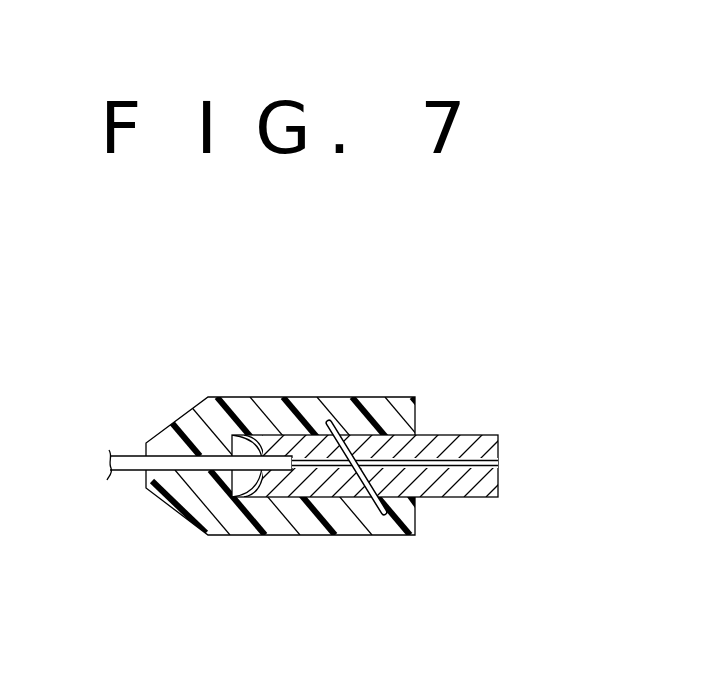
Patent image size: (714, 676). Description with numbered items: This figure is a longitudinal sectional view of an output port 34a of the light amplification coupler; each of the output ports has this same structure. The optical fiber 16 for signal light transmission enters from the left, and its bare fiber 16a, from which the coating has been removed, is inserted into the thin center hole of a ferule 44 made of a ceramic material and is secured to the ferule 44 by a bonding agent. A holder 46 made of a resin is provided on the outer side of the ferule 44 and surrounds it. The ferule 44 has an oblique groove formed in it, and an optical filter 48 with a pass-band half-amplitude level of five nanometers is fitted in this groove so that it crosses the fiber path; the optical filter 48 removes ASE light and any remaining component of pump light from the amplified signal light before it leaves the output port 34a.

The output port 34a is at (249, 380).
The holder 46 is at (306, 537).
The ferule 44 is at (455, 434).
The optical filter 48 is at (330, 421).
The optical fiber 16 is at (113, 456).
The bare fiber 16a is at (493, 466).